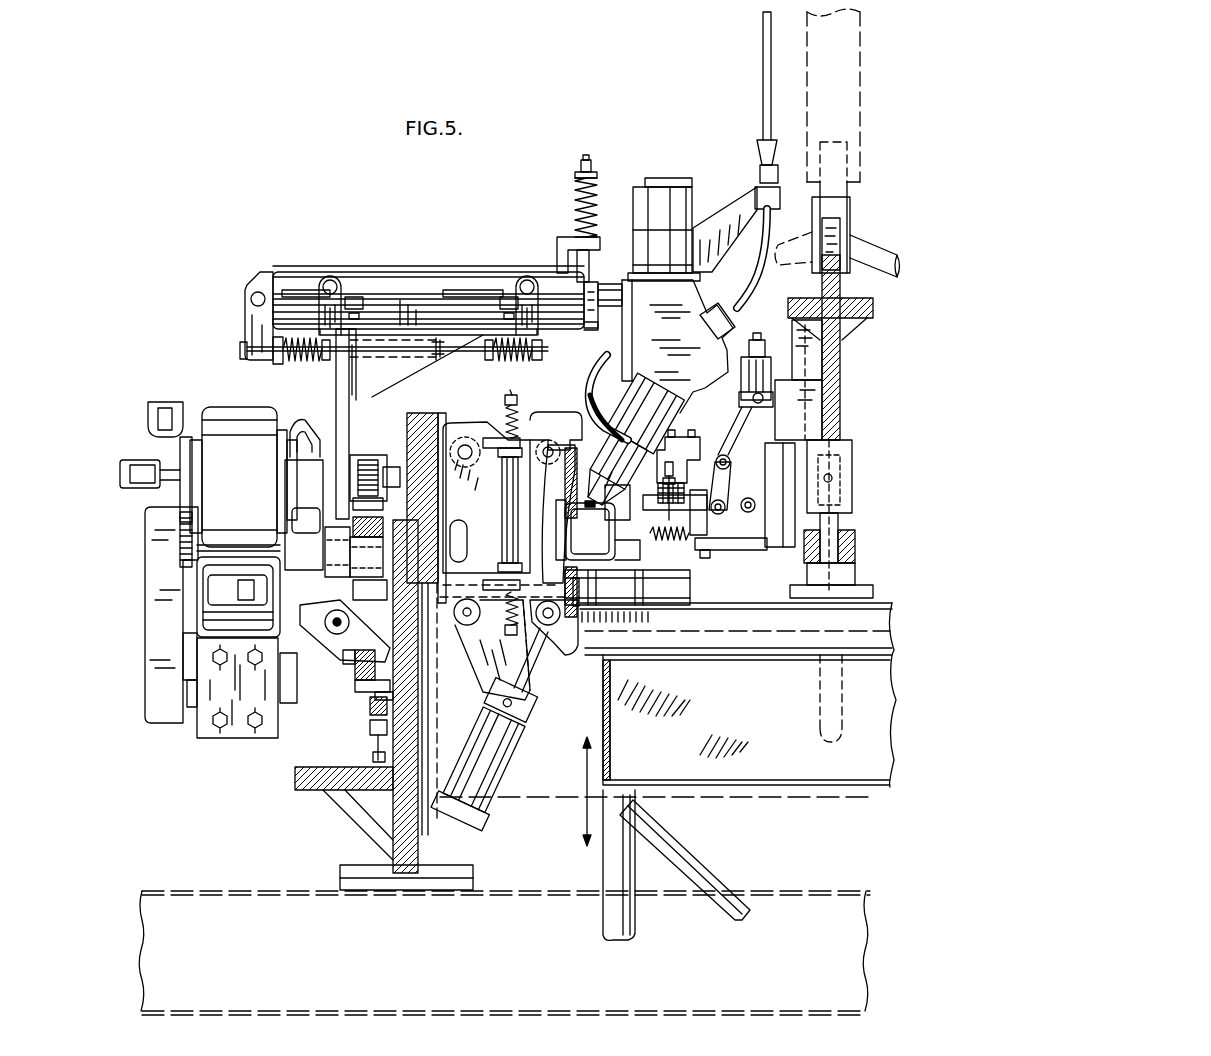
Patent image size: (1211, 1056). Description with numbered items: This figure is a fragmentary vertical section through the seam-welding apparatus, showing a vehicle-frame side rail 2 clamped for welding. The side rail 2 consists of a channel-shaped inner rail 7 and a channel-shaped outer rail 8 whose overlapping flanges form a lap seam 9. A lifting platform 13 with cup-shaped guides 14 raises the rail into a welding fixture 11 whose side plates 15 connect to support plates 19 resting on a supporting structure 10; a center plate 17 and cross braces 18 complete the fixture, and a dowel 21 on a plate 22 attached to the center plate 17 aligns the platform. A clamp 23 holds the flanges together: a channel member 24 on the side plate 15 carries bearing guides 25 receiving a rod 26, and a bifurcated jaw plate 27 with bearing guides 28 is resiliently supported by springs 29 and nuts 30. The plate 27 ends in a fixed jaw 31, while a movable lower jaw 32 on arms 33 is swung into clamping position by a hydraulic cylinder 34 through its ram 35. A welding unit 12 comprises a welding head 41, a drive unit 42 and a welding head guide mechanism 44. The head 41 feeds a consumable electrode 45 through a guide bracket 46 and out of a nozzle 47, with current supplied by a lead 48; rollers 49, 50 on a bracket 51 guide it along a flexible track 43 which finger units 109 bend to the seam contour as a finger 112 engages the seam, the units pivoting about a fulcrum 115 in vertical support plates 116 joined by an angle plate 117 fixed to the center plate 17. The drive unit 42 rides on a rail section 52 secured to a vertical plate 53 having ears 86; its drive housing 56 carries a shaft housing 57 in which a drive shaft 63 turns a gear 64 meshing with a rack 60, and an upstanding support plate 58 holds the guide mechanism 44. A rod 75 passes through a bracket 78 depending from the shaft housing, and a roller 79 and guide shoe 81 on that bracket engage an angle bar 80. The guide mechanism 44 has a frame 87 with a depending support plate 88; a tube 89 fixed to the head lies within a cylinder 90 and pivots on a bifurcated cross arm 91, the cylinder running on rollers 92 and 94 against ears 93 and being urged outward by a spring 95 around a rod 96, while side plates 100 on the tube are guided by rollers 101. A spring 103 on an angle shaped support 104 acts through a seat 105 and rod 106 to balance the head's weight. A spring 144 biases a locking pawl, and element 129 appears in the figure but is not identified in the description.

The side rail 2 is at (627, 555).
The inner rail 7 is at (628, 530).
The outer rail 8 is at (569, 530).
The lap seam 9 is at (596, 528).
The supporting structure 10 is at (448, 1012).
The welding fixture 11 is at (443, 413).
The welding unit 12 is at (666, 170).
The lifting platform 13 is at (768, 775).
The cup-shaped guide 14 is at (636, 581).
The side plate 15 is at (423, 409).
The center plate 17 is at (845, 362).
The cross brace 18 is at (870, 255).
The support plate 19 is at (385, 822).
The dowel 21 is at (843, 535).
The plate 22 is at (853, 470).
The clamp 23 is at (560, 412).
The channel member 24 is at (471, 432).
The bearing guide 25 is at (503, 490).
The rod 26 is at (505, 512).
The bifurcated jaw plate 27 is at (468, 652).
The bearing guide 28 is at (500, 438).
The spring 29 is at (520, 405).
The nut 30 is at (512, 400).
The fixed jaw 31 is at (576, 428).
The movable lower jaw 32 is at (562, 652).
The arm 33 is at (537, 438).
The hydraulic cylinder 34 is at (512, 742).
The ram 35 is at (537, 663).
The welding head 41 is at (640, 343).
The drive unit 42 is at (251, 400).
The flexible track 43 is at (655, 496).
The welding head guide mechanism 44 is at (445, 275).
The consumable electrode 45 is at (763, 60).
The guide bracket 46 is at (740, 205).
The nozzle 47 is at (620, 446).
The lead 48 is at (586, 380).
The roller 49 is at (674, 468).
The roller 50 is at (676, 481).
The bracket 51 is at (700, 447).
The rail section 52 is at (385, 528).
The vertical plate 53 is at (392, 599).
The drive housing 56 is at (212, 404).
The shaft housing 57 is at (306, 424).
The upstanding support plate 58 is at (336, 385).
The rack 60 is at (385, 502).
The drive shaft 63 is at (398, 476).
The gear 64 is at (368, 455).
The rod 75 is at (326, 632).
The bracket 78 is at (343, 653).
The roller 79 is at (355, 670).
The angle bar 80 is at (365, 684).
The guide shoe 81 is at (385, 645).
The ear 86 is at (370, 700).
The frame 87 is at (398, 318).
The depending support plate 88 is at (362, 374).
The tube 89 is at (612, 290).
The cylinder 90 is at (366, 272).
The bifurcated cross arm 91 is at (245, 303).
The roller 92 is at (330, 279).
The ear 93 is at (290, 296).
The roller 94 is at (360, 300).
The spring 95 is at (496, 361).
The rod 96 is at (240, 348).
The side plate 100 is at (608, 320).
The roller 101 is at (586, 300).
The spring 103 is at (577, 201).
The angle shaped support 104 is at (567, 237).
The seat 105 is at (578, 172).
The rod 106 is at (590, 259).
The finger unit 109 is at (681, 548).
The finger 112 is at (624, 471).
The fulcrum 115 is at (756, 506).
The vertical support plate 116 is at (765, 485).
The angle plate 117 is at (795, 445).
The valve 129 is at (778, 365).
The spring 144 is at (745, 547).